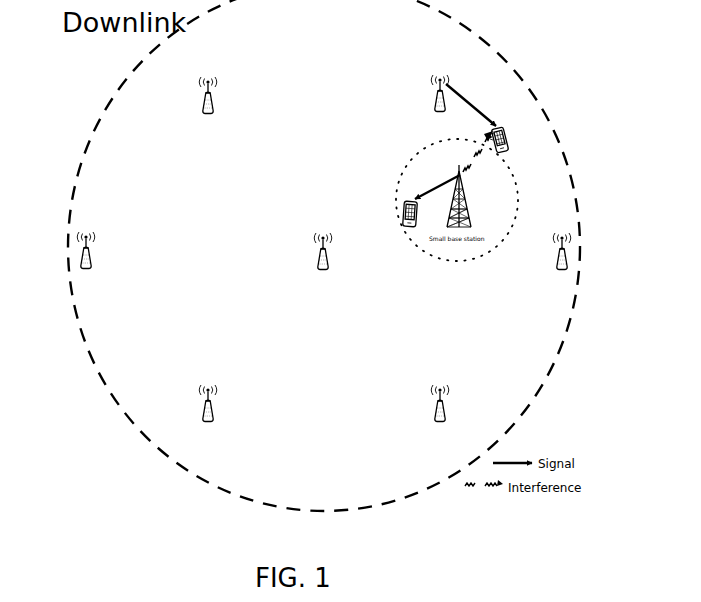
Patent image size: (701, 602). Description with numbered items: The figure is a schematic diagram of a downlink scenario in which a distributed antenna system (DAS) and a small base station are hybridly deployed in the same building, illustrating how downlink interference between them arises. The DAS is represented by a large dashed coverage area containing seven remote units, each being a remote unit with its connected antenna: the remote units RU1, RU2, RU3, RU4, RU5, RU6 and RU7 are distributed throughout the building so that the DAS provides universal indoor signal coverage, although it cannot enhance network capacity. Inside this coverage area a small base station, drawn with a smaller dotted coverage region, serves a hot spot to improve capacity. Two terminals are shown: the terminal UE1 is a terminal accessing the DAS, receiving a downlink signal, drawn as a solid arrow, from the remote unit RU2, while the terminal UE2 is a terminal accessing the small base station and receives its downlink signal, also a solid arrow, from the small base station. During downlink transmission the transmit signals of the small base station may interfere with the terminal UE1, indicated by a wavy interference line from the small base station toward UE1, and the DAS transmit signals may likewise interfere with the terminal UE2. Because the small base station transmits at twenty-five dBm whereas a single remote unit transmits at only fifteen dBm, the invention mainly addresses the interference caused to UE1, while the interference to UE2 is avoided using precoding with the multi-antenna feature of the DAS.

The remote unit RU1 is at (208, 105).
The remote unit RU2 is at (440, 103).
The remote unit RU3 is at (86, 260).
The remote unit RU4 is at (323, 261).
The remote unit RU5 is at (562, 261).
The remote unit RU6 is at (208, 413).
The remote unit RU7 is at (440, 413).
The terminal accessing the DAS UE1 is at (499, 148).
The terminal accessing the small base station UE2 is at (410, 223).